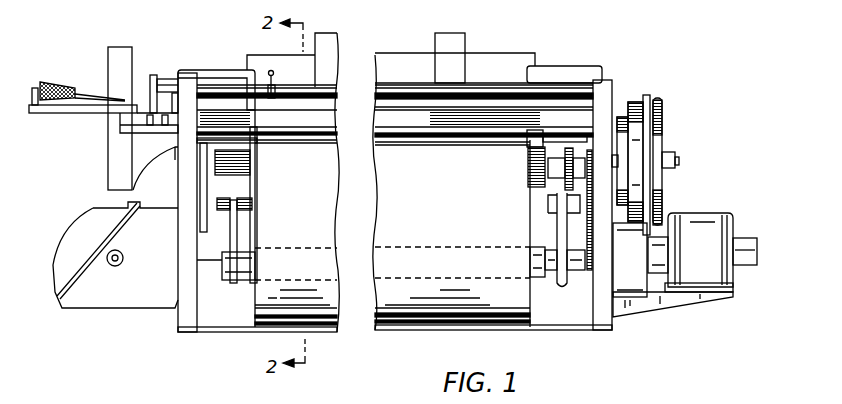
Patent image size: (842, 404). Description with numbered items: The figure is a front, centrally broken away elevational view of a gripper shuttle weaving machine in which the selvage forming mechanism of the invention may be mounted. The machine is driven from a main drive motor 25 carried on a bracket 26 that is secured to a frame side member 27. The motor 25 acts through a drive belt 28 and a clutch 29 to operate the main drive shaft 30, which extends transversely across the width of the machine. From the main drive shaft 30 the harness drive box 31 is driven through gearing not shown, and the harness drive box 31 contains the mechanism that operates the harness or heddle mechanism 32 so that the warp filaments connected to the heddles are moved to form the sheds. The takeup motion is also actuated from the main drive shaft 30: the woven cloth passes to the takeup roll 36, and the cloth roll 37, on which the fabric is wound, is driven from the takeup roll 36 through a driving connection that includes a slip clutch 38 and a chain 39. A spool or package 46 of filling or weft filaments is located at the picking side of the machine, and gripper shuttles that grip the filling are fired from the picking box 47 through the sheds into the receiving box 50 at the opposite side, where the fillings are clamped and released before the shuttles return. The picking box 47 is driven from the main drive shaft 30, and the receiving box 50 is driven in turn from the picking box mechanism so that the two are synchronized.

The spool or package 46 is at (60, 82).
The picking box 47 is at (215, 70).
The harness drive box 31 is at (159, 246).
The harness or heddle mechanism 32 is at (493, 55).
The receiving box 50 is at (557, 67).
The frame side member 27 is at (603, 330).
The takeup roll 36 is at (537, 163).
The slip clutch 38 is at (560, 171).
The chain 39 is at (585, 278).
The cloth roll 37 is at (536, 273).
The clutch 29 is at (633, 100).
The drive belt 28 is at (653, 103).
The main drive shaft 30 is at (679, 161).
The main drive motor 25 is at (700, 213).
The bracket 26 is at (676, 302).